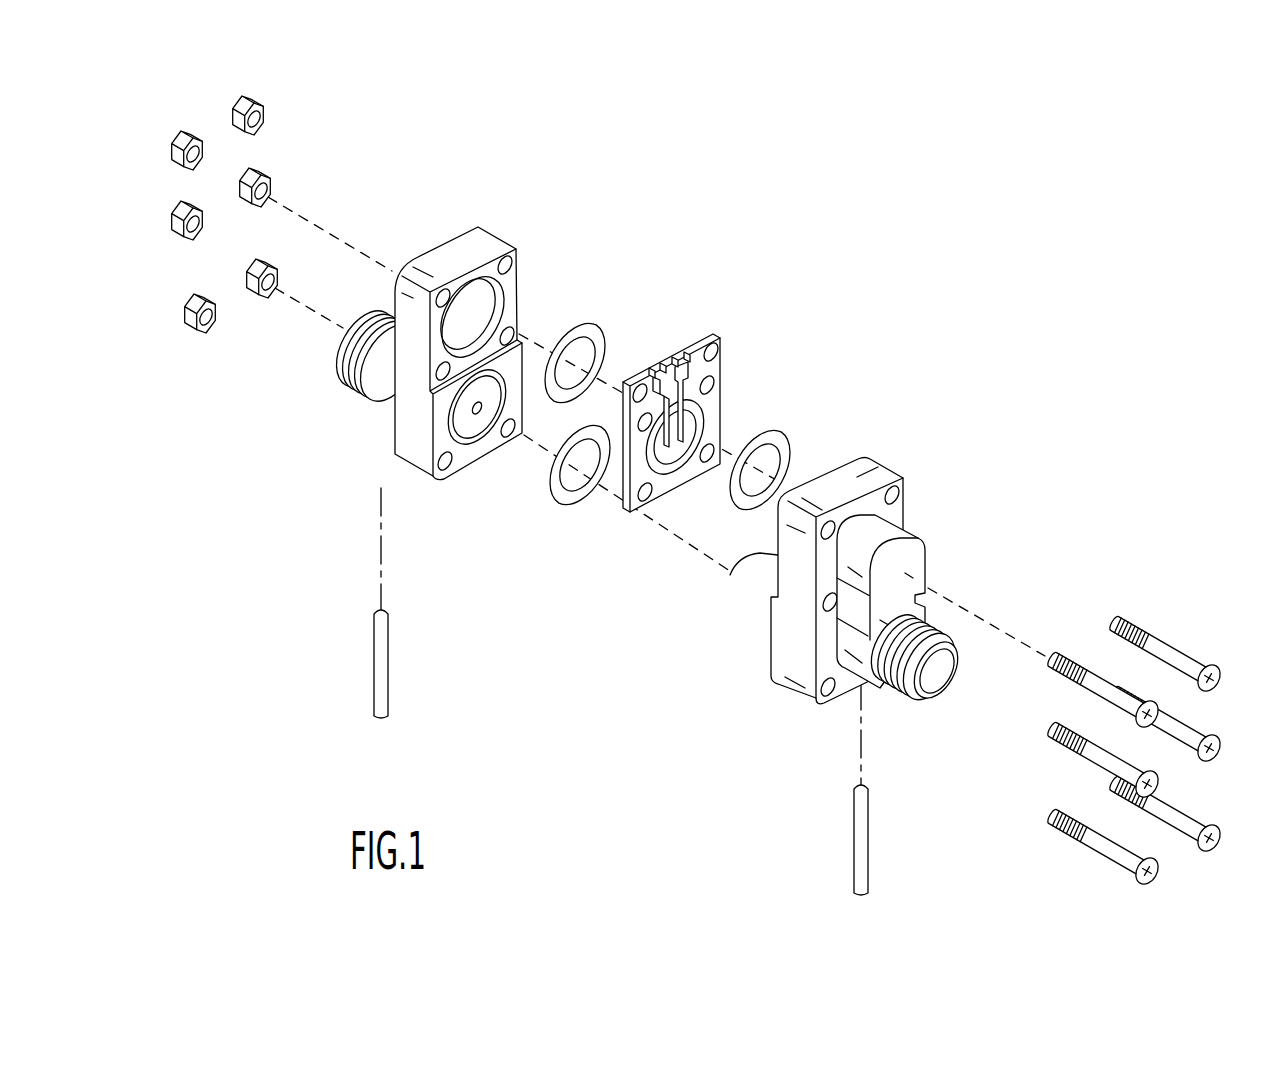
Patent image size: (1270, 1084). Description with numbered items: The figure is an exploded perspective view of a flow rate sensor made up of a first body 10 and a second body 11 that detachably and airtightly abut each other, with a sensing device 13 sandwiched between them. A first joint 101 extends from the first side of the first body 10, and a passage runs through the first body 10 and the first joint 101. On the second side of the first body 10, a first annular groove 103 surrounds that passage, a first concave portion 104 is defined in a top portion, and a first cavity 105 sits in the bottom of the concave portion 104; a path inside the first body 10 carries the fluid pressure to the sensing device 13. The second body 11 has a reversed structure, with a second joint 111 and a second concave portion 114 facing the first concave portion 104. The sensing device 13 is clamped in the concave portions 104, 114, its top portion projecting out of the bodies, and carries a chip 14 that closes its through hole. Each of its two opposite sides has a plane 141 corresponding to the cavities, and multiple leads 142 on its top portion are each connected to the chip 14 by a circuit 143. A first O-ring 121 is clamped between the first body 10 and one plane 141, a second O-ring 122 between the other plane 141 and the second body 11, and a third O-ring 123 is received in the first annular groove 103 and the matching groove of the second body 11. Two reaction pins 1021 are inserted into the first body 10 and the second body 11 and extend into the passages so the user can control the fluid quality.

The first body 10 is at (342, 357).
The first joint 101 is at (340, 367).
The first annular groove 103 is at (458, 440).
The first concave portion 104 is at (443, 372).
The first cavity 105 is at (472, 302).
The reaction pins 1021 is at (380, 658).
The second body 11 is at (812, 615).
The second joint 111 is at (900, 673).
The second concave portion 114 is at (740, 565).
The first O-ring 121 is at (580, 325).
The second O-ring 122 is at (780, 438).
The third O-ring 123 is at (567, 500).
The sensing device 13 is at (699, 337).
The chip 14 is at (753, 396).
The plane 141 is at (697, 413).
The leads 142 is at (685, 357).
The circuit 143 is at (687, 387).